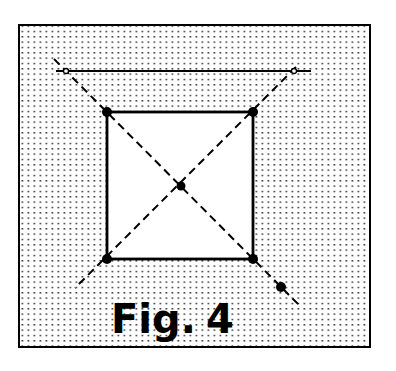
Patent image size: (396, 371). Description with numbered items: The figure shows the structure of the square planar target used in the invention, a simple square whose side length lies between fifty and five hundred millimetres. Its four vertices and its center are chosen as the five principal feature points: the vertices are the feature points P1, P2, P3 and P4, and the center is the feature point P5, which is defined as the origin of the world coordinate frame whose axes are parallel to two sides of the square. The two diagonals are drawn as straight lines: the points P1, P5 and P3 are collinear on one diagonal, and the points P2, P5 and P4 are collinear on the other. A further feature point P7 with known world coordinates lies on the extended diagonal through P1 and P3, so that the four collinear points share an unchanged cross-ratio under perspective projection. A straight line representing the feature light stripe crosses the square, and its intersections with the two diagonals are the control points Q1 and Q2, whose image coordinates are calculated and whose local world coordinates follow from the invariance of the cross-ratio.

The principal feature point P1 is at (120, 97).
The principal feature point P2 is at (237, 97).
The principal feature point P3 is at (241, 273).
The principal feature point P4 is at (117, 273).
The principal feature point P5 is at (202, 186).
The feature point P7 is at (297, 279).
The control point Q1 is at (77, 57).
The control point Q2 is at (282, 57).